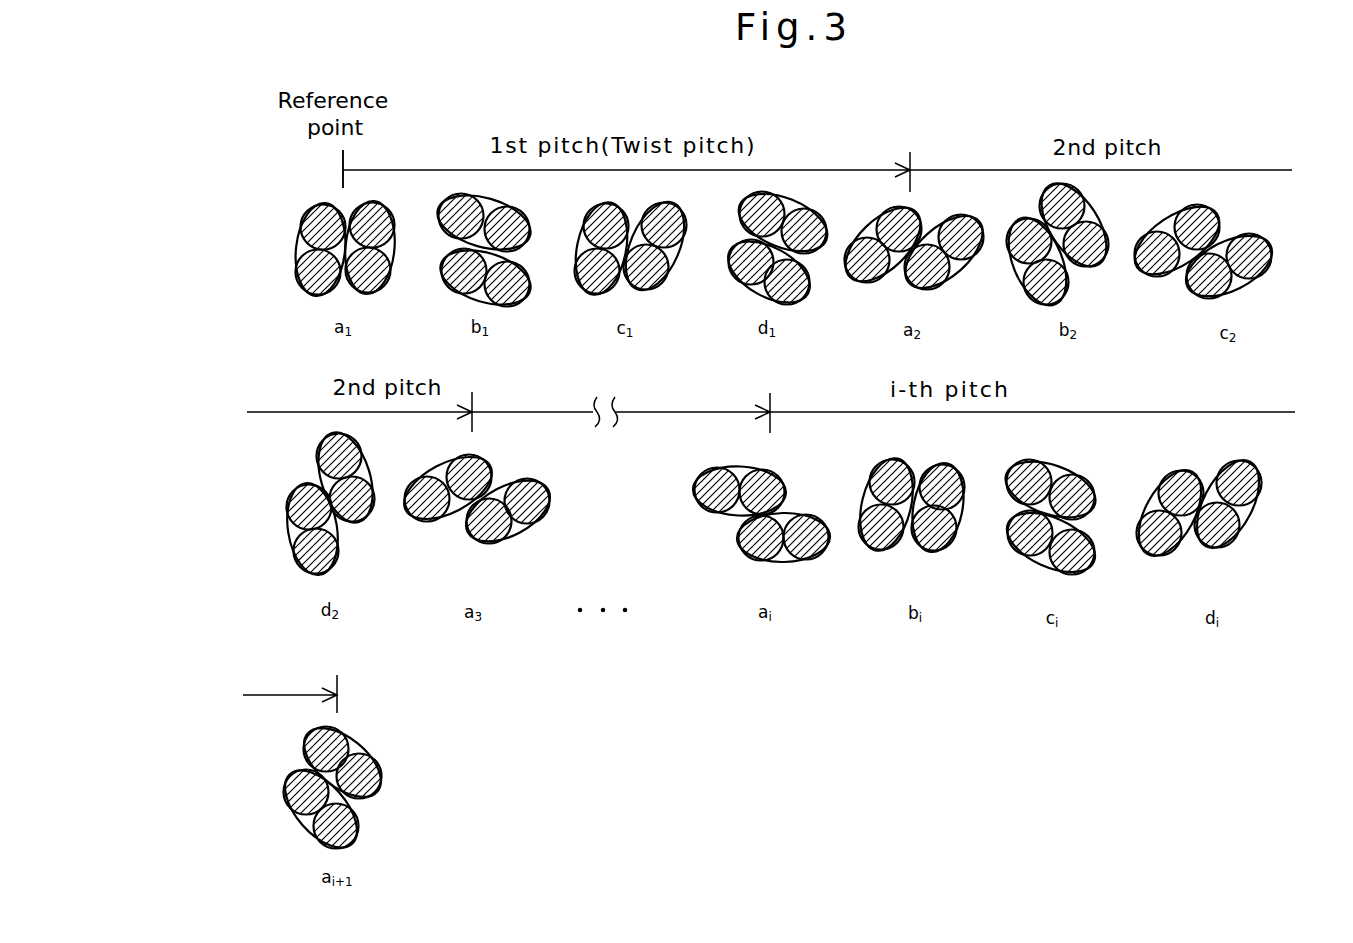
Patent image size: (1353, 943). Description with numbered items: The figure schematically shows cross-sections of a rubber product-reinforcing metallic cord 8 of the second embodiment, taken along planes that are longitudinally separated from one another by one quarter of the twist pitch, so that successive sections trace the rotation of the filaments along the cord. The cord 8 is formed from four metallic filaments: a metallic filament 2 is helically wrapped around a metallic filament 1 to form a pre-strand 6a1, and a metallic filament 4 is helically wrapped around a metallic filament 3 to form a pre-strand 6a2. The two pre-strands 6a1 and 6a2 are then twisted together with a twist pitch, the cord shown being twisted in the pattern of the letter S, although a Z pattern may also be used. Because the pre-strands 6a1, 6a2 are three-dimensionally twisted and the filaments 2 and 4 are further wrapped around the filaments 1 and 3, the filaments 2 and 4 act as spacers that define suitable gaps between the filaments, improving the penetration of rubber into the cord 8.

The metallic filament 1 is at (303, 277).
The metallic filament 2 is at (313, 227).
The metallic filament 3 is at (372, 213).
The metallic filament 4 is at (377, 273).
The pre-strand 6a1 is at (252, 192).
The pre-strand 6a2 is at (372, 146).
The metallic cord 8 is at (303, 167).